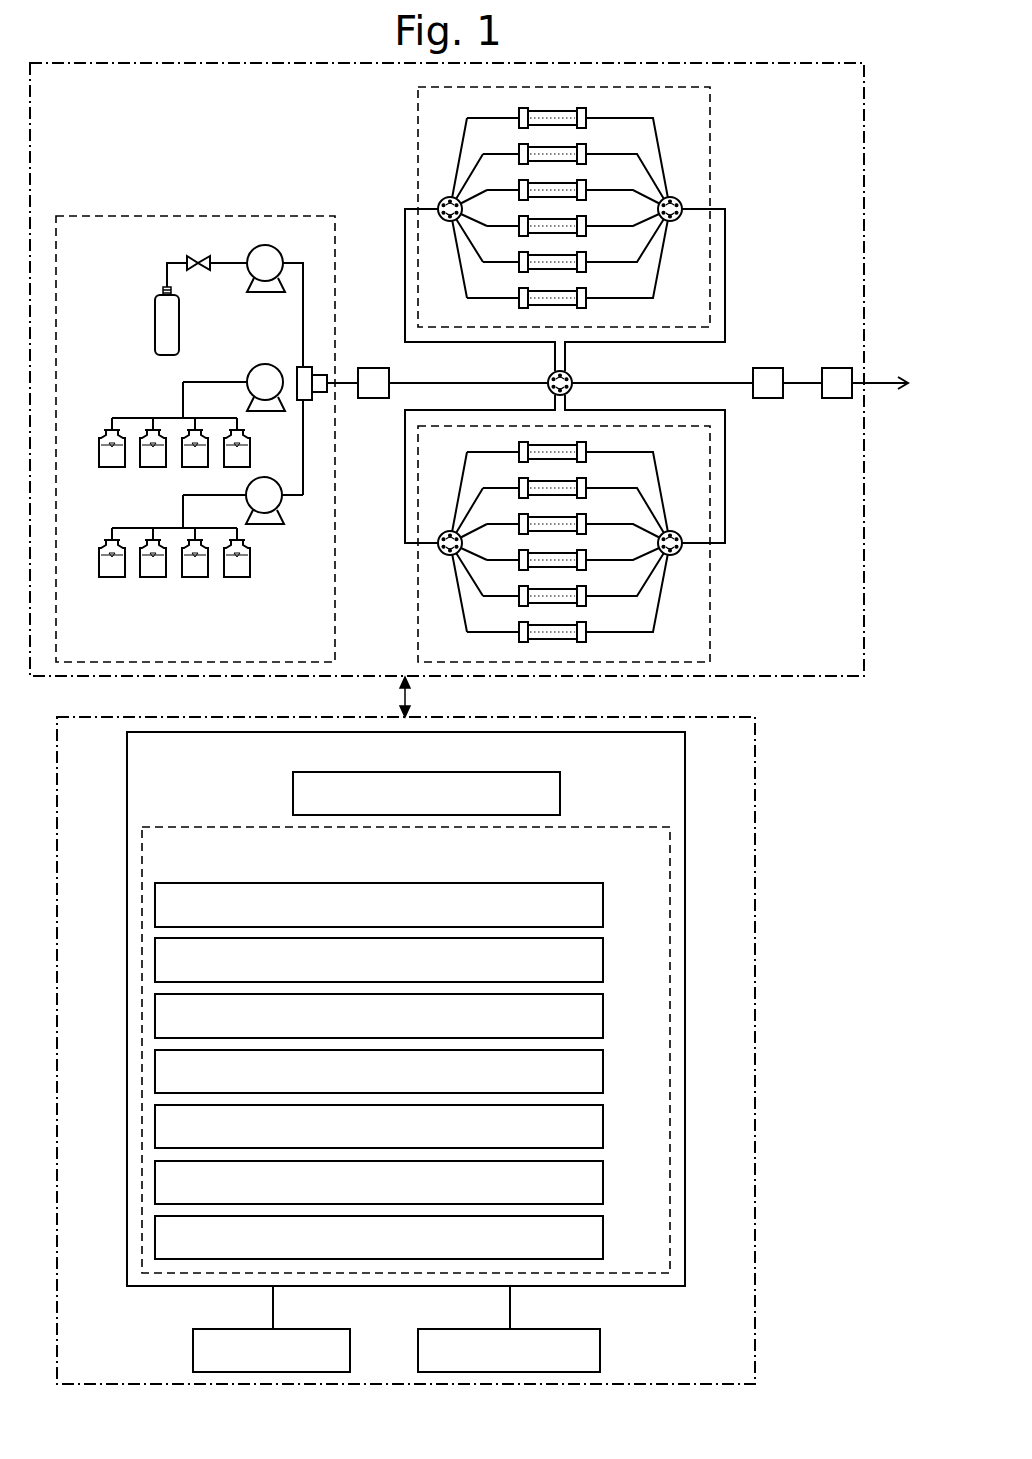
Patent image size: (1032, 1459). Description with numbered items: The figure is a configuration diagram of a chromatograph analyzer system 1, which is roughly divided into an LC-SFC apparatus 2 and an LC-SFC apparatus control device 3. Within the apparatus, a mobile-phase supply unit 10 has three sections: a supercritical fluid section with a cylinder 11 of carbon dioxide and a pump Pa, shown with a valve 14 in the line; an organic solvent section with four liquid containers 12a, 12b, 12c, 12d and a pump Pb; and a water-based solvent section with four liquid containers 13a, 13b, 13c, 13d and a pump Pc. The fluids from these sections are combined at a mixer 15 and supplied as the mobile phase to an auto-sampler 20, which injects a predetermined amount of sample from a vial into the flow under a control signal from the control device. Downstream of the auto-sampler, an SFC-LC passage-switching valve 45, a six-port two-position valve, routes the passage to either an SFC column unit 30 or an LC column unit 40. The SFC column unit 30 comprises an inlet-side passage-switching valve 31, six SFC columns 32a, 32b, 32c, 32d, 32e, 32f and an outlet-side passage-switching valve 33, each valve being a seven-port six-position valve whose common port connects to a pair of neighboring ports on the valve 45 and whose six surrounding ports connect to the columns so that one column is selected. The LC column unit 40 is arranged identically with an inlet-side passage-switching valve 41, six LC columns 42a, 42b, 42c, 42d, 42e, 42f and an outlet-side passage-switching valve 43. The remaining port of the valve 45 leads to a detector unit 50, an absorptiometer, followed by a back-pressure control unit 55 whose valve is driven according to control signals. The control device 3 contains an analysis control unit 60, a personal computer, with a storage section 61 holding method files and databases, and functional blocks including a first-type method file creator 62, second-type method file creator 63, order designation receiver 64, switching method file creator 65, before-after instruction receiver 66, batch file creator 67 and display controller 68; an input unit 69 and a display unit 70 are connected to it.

The chromatograph analyzer system 1 is at (907, 110).
The LC-SFC apparatus 2 is at (864, 235).
The LC-SFC apparatus control device 3 is at (755, 872).
The mobile-phase supply unit 10 is at (335, 627).
The cylinder 11 is at (155, 330).
The liquid container 12a is at (110, 468).
The liquid container 12b is at (151, 468).
The liquid container 12c is at (193, 468).
The liquid container 12d is at (251, 453).
The liquid container 13a is at (110, 578).
The liquid container 13b is at (151, 578).
The liquid container 13c is at (193, 578).
The liquid container 13d is at (235, 578).
The valve 14 is at (195, 272).
The mixer 15 is at (297, 367).
The pump Pa is at (247, 250).
The pump Pb is at (248, 369).
The pump Pc is at (287, 505).
The auto-sampler 20 is at (373, 399).
The SFC column unit 30 is at (710, 118).
The inlet-side passage-switching valve 31 is at (439, 204).
The SFC column 32a is at (587, 109).
The SFC column 32b is at (587, 145).
The SFC column 32c is at (587, 181).
The SFC column 32d is at (587, 217).
The SFC column 32e is at (587, 253).
The SFC column 32f is at (587, 289).
The outlet-side passage-switching valve 33 is at (681, 204).
The LC column unit 40 is at (710, 602).
The inlet-side passage-switching valve 41 is at (440, 548).
The LC column 42a is at (587, 443).
The LC column 42b is at (587, 479).
The LC column 42c is at (587, 515).
The LC column 42d is at (587, 551).
The LC column 42e is at (587, 587).
The LC column 42f is at (587, 623).
The outlet-side passage-switching valve 43 is at (681, 549).
The SFC-LC passage-switching valve 45 is at (572, 378).
The detector unit 50 is at (767, 399).
The back-pressure control unit 55 is at (836, 399).
The analysis control unit 60 is at (685, 888).
The storage section 61 is at (560, 788).
The first-type method file creator 62 is at (603, 901).
The second-type method file creator 63 is at (603, 956).
The order designation receiver 64 is at (603, 1012).
The switching method file creator 65 is at (603, 1067).
The before-after instruction receiver 66 is at (603, 1122).
The batch file creator 67 is at (603, 1178).
The display controller 68 is at (603, 1233).
The input unit 69 is at (350, 1352).
The display unit 70 is at (600, 1352).